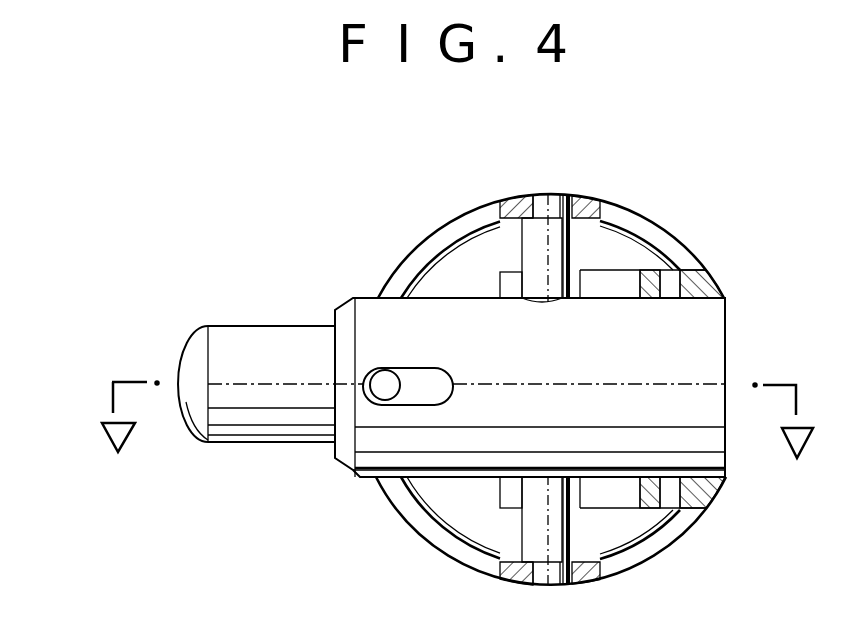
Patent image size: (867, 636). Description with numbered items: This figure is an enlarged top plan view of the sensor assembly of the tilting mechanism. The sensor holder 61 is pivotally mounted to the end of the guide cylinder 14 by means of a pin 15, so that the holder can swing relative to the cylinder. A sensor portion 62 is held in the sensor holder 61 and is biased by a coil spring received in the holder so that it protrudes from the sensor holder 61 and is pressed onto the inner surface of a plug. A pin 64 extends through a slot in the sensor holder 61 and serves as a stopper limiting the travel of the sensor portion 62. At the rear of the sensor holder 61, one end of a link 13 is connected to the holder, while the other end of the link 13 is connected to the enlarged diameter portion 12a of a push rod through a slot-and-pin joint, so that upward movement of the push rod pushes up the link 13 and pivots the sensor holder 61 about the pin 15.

The enlarged diameter portion 12a is at (453, 268).
The link 13 is at (614, 281).
The guide cylinder 14 is at (682, 241).
The pin 15 is at (527, 525).
The sensor holder 61 is at (385, 457).
The sensor portion 62 is at (243, 332).
The pin 64 is at (385, 383).